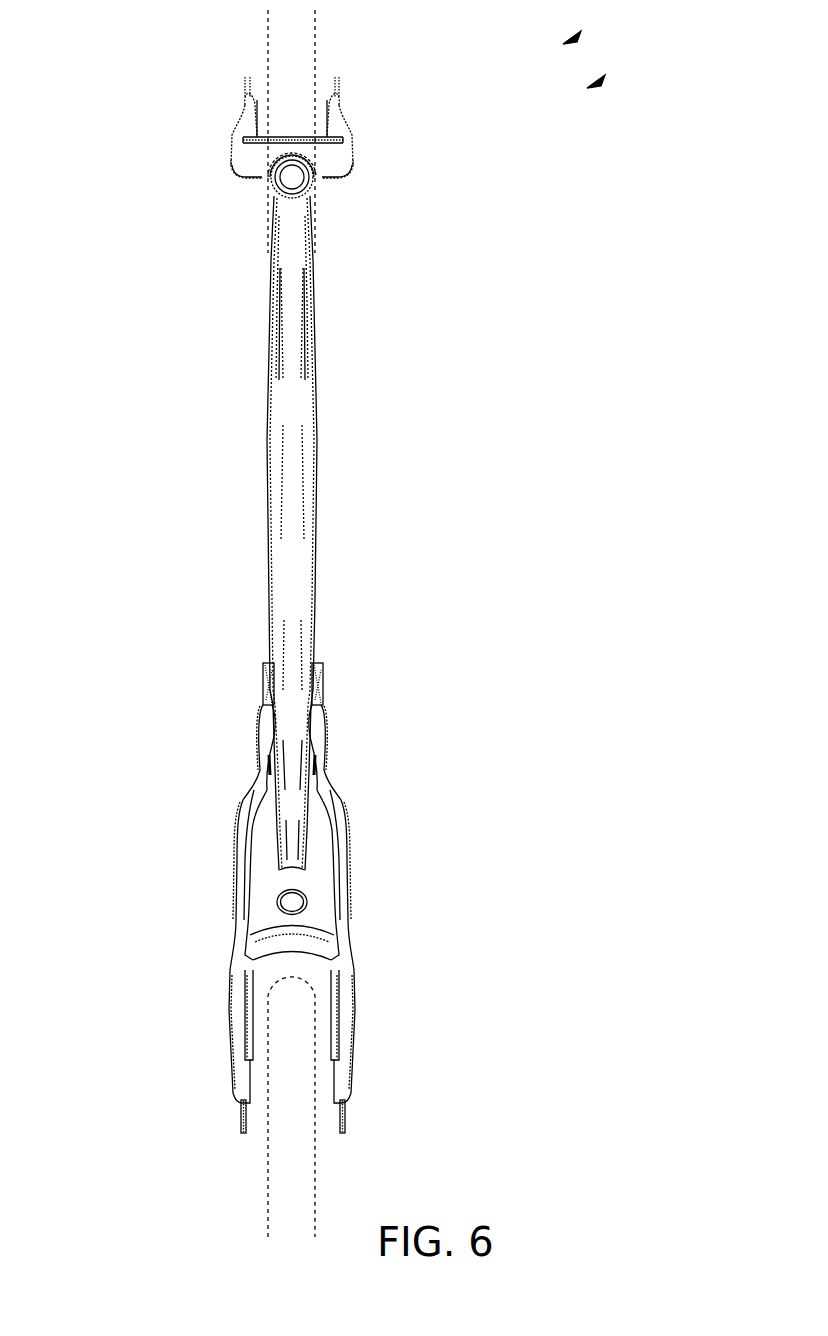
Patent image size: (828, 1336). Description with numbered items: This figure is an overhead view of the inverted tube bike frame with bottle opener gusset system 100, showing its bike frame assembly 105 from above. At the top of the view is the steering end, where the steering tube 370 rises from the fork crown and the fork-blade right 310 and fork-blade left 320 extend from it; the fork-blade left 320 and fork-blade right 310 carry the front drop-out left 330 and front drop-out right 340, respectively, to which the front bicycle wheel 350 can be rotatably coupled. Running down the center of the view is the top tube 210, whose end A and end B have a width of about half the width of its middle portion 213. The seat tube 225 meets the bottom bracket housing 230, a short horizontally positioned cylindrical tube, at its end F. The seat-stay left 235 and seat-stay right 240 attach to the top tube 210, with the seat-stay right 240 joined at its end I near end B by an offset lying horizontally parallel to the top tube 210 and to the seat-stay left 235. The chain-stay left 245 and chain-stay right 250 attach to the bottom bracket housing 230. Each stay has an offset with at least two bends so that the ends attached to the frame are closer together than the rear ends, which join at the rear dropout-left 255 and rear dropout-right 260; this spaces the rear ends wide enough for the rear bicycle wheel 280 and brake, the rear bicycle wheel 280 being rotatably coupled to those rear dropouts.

The inverted tube bike frame with bottle opener gusset system 100 is at (578, 38).
The bike frame assembly 105 is at (602, 82).
The top tube 210 is at (268, 310).
The middle portion 213 is at (292, 435).
The seat tube 225 is at (292, 882).
The bottom bracket housing 230 is at (263, 681).
The seat-stay left 235 is at (240, 1013).
The seat-stay right 240 is at (347, 1010).
The chain-stay left 245 is at (243, 843).
The chain-stay right 250 is at (313, 762).
The rear dropout-left 255 is at (240, 1123).
The rear dropout-right 260 is at (347, 1123).
The rear bicycle wheel 280 is at (267, 1168).
The fork-blade right 310 is at (353, 157).
The fork-blade left 320 is at (230, 157).
The front drop-out left 330 is at (247, 90).
The front drop-out right 340 is at (337, 90).
The front bicycle wheel 350 is at (316, 47).
The steering tube 370 is at (291, 150).